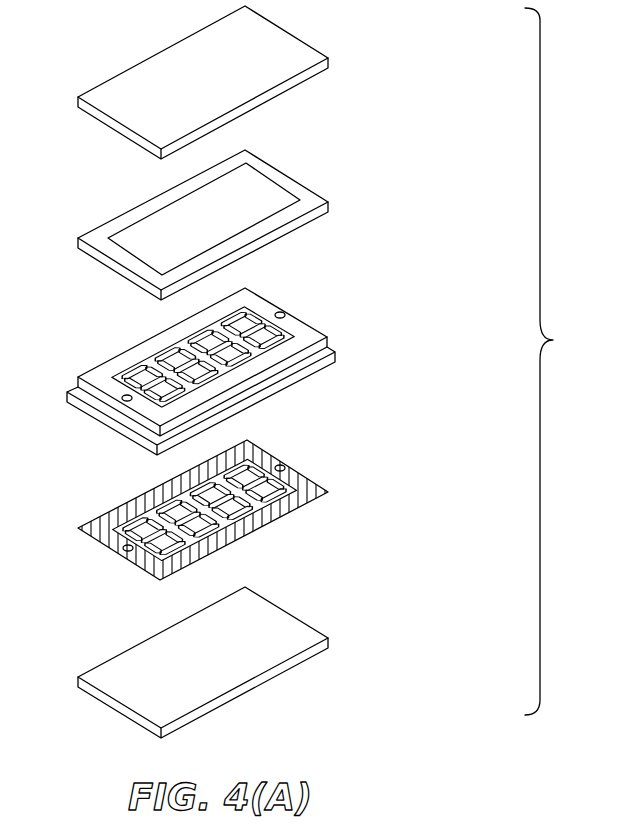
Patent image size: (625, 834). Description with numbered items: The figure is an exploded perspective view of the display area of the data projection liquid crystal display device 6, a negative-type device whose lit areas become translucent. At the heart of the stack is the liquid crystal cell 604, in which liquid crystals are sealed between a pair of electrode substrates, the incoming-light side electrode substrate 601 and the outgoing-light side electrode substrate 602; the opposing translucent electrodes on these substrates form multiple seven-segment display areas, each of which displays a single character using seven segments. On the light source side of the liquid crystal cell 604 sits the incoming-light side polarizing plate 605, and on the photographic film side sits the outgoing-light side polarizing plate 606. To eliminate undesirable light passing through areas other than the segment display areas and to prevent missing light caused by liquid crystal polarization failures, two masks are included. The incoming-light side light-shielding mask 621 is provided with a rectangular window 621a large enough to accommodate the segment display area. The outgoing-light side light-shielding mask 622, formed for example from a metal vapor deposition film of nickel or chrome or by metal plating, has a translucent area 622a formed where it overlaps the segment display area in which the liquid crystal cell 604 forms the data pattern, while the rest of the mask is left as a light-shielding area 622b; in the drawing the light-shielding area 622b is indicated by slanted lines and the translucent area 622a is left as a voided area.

The data projection liquid crystal display device 6 is at (550, 361).
The incoming-light side polarizing plate 605 is at (297, 45).
The incoming-light side light-shielding mask 621 is at (194, 221).
The rectangular window 621a is at (155, 238).
The liquid crystal cell 604 is at (260, 369).
The incoming-light side electrode substrate 601 is at (203, 359).
The outgoing-light side electrode substrate 602 is at (307, 372).
The outgoing-light side light-shielding mask 622 is at (238, 510).
The translucent area 622a is at (240, 522).
The light-shielding area 622b is at (297, 500).
The outgoing-light side polarizing plate 606 is at (300, 637).